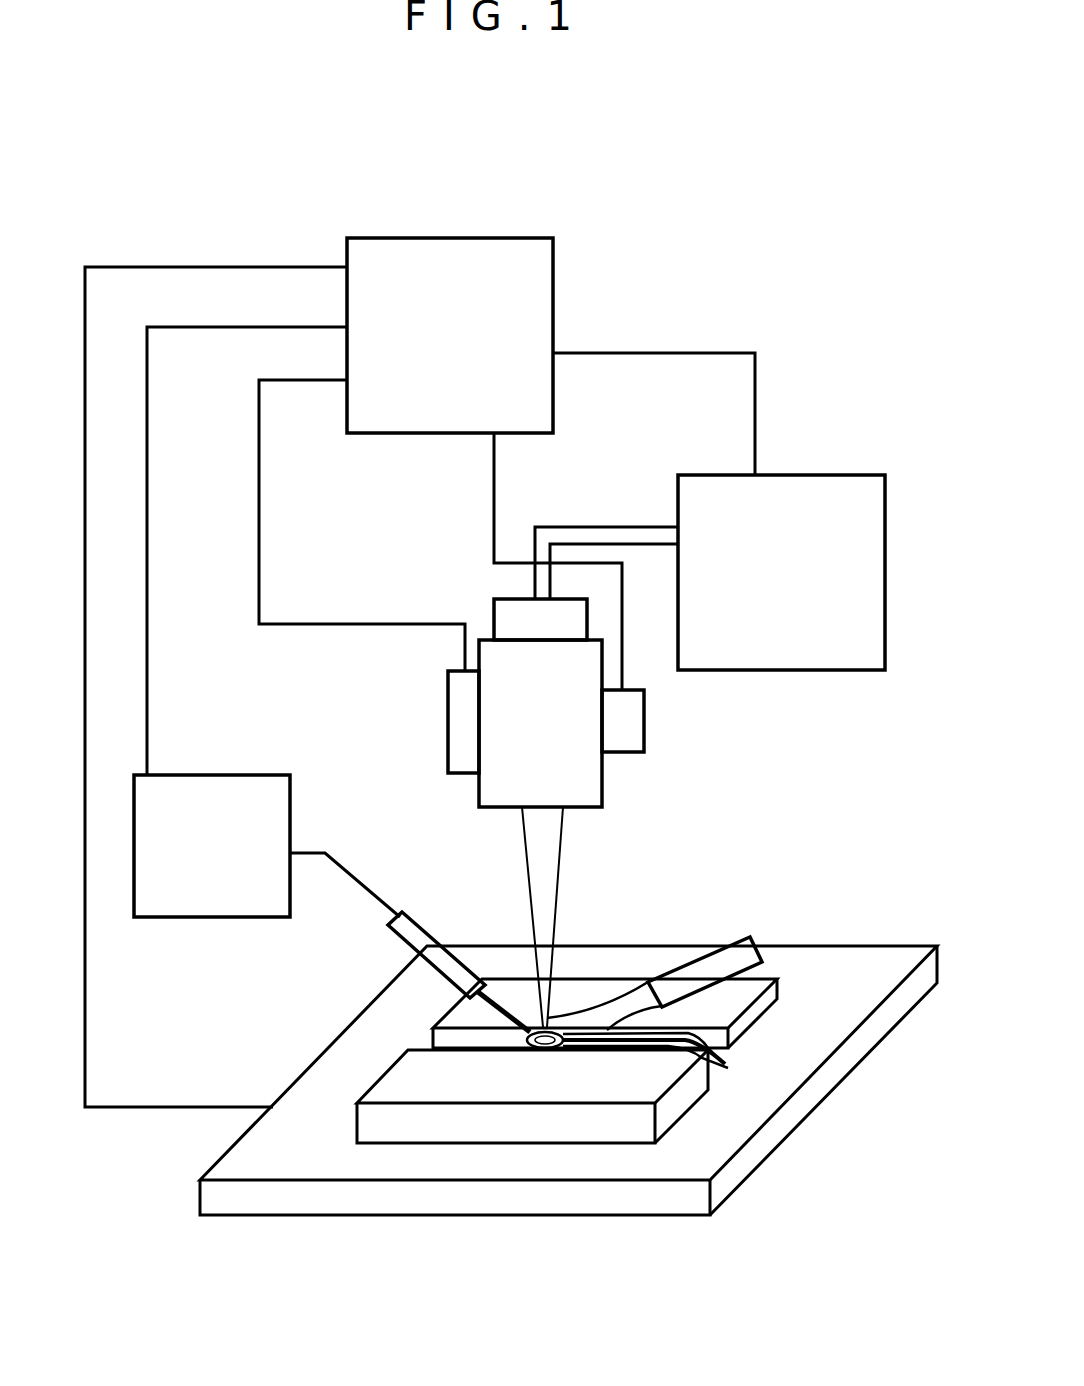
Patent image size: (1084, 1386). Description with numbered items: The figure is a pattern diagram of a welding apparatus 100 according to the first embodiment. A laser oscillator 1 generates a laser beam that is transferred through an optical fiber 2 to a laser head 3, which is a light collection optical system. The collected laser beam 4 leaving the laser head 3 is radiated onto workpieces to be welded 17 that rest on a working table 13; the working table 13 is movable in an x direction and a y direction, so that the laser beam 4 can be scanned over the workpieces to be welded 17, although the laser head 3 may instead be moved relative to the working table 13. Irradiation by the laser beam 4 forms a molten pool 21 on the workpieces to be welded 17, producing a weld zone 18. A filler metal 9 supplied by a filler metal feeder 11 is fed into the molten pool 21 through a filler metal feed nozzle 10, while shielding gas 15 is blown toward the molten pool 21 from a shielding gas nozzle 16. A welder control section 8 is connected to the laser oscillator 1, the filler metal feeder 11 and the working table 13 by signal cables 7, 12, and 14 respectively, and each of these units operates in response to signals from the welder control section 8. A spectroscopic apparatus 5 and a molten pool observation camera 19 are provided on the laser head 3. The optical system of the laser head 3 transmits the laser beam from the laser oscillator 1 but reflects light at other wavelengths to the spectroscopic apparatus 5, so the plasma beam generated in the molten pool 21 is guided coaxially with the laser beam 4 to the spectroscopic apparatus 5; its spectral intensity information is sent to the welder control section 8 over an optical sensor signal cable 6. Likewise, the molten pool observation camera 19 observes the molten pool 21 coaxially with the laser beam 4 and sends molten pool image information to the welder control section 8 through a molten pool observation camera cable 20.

The welding apparatus 100 is at (528, 113).
The laser oscillator 1 is at (760, 640).
The optical fiber 2 is at (603, 526).
The laser head 3 is at (587, 777).
The laser beam 4 is at (565, 828).
The spectroscopic apparatus 5 is at (462, 714).
The optical sensor signal cable 6 is at (265, 506).
The signal cable 7 is at (712, 350).
The welder control section 8 is at (535, 290).
The filler metal 9 is at (520, 1027).
The filler metal feed nozzle 10 is at (405, 922).
The filler metal feeder 11 is at (172, 788).
The signal cable 12 is at (217, 327).
The working table 13 is at (257, 1145).
The signal cable 14 is at (118, 267).
The shielding gas 15 is at (619, 1000).
The shielding gas nozzle 16 is at (741, 955).
The workpieces to be welded 17 is at (495, 1113).
The weld zone 18 is at (733, 1060).
The molten pool observation camera 19 is at (613, 717).
The molten pool observation camera cable 20 is at (492, 492).
The molten pool 21 is at (548, 1047).